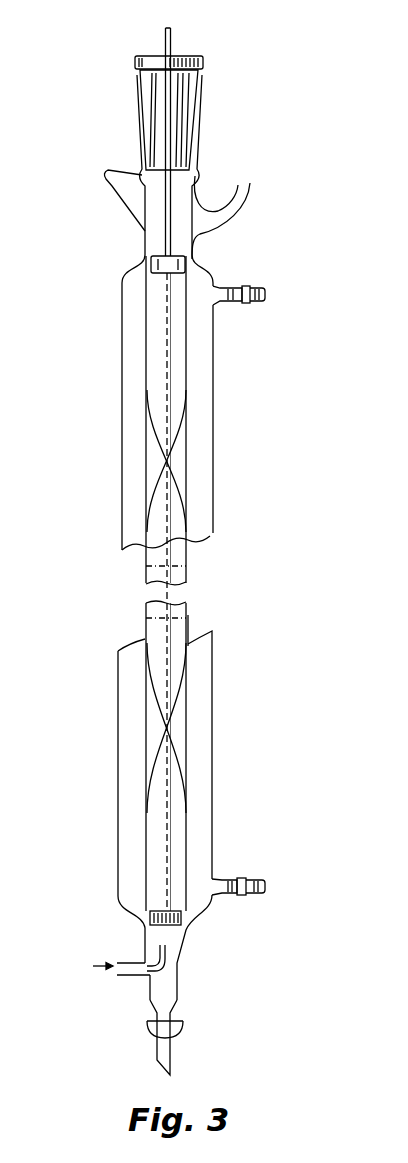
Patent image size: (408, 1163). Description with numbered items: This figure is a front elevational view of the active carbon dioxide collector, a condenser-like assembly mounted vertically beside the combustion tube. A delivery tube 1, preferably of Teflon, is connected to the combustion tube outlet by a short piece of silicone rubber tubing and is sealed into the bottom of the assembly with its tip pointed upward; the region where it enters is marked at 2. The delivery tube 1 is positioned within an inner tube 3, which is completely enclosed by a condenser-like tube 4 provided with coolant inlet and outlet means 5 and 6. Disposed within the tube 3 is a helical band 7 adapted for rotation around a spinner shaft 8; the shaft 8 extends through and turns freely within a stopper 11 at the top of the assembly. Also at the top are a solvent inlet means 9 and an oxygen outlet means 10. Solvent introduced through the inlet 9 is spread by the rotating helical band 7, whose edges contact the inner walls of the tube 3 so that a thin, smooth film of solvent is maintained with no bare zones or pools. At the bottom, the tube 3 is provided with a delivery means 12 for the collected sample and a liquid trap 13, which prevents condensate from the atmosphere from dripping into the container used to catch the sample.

The delivery tube 1 is at (117, 960).
The inlet tube 2 is at (142, 975).
The tube 3 is at (187, 727).
The condenser-like tube 4 is at (118, 793).
The coolant inlet means 5 is at (241, 875).
The coolant outlet means 6 is at (253, 302).
The helical band 7 is at (176, 487).
The spinner shaft 8 is at (174, 34).
The solvent inlet means 9 is at (122, 183).
The oxygen outlet means 10 is at (244, 194).
The stopper 11 is at (158, 128).
The delivery means 12 is at (172, 1052).
The liquid trap 13 is at (177, 1028).